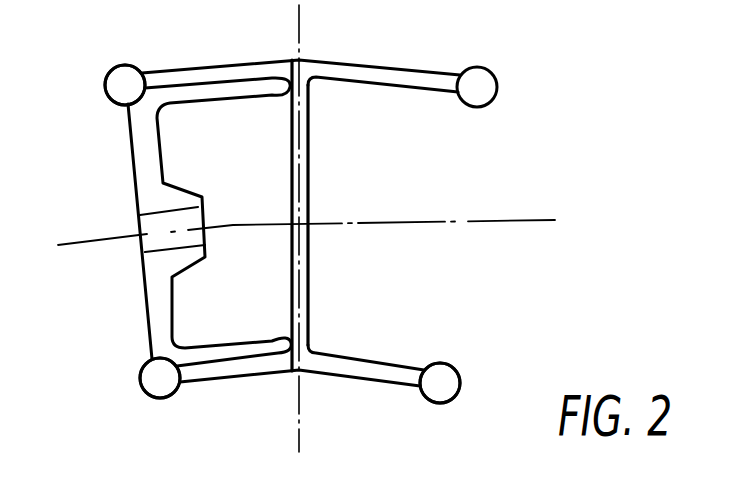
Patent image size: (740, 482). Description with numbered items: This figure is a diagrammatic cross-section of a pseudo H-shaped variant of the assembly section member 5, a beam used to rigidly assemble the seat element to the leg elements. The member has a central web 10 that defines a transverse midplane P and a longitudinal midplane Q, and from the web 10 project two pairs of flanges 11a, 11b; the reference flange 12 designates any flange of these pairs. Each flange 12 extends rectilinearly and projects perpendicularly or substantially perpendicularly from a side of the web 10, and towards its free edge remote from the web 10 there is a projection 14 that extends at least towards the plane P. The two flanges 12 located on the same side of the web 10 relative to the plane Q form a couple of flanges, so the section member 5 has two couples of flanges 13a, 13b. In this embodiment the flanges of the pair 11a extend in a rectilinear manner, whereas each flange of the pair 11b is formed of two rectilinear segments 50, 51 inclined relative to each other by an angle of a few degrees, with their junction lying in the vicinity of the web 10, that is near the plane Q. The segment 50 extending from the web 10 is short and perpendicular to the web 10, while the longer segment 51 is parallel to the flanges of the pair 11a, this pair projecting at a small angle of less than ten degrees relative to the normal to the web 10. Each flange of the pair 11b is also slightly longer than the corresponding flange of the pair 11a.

The assembly section member 5 is at (295, 232).
The central web 10 is at (310, 178).
The pair of flanges 11a is at (150, 398).
The pair of flanges 11b is at (155, 72).
The flange 12 is at (393, 68).
The couple of flanges 13a is at (115, 88).
The couple of flanges 13b is at (480, 97).
The projection 14 is at (452, 400).
The rectilinear segment 50 is at (290, 60).
The rectilinear segment 51 is at (233, 62).
The transverse midplane P is at (388, 220).
The longitudinal midplane Q is at (300, 423).